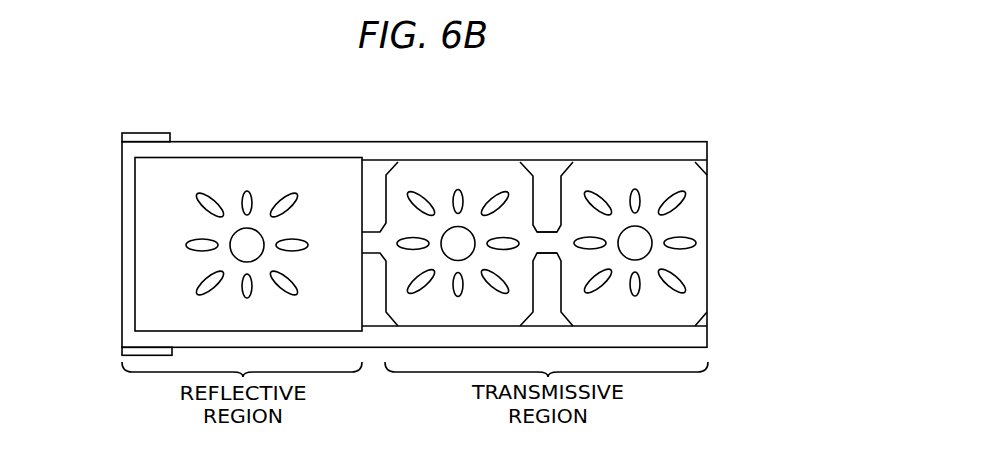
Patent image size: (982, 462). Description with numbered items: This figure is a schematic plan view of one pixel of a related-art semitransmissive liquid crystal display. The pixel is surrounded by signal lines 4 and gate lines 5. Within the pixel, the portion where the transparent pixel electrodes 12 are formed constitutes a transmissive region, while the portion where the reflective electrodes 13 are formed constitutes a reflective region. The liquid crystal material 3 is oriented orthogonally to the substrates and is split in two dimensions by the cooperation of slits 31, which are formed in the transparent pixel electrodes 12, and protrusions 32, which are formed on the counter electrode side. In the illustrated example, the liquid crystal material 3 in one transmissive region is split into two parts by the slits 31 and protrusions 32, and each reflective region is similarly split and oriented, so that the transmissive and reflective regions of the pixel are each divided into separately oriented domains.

The liquid crystal material 3 is at (373, 317).
The signal lines 4 is at (122, 292).
The gate lines 5 is at (150, 147).
The transparent pixel electrodes 12 is at (693, 277).
The reflective electrodes 13 is at (160, 247).
The slits 31 is at (548, 277).
The protrusions 32 is at (640, 240).